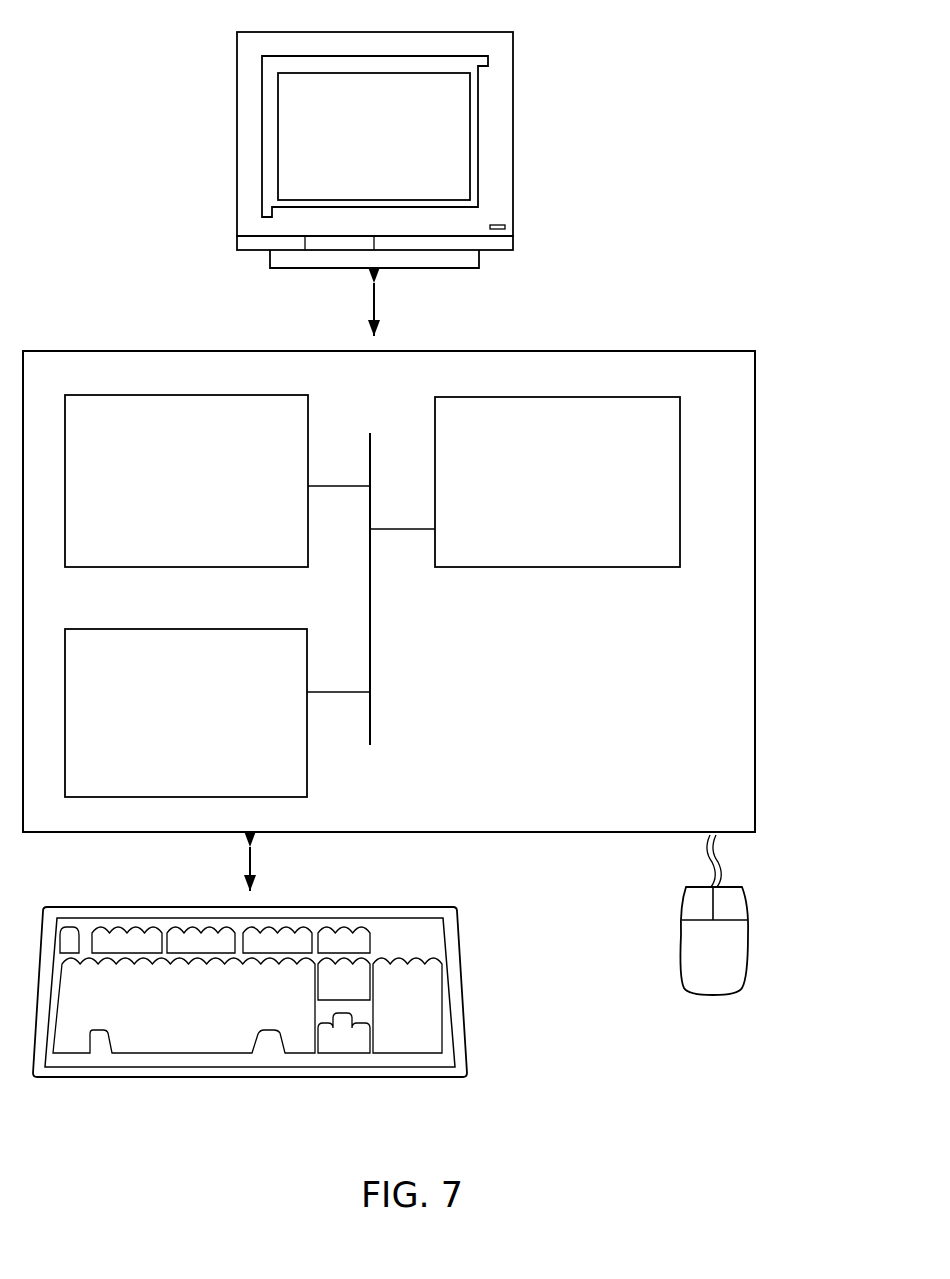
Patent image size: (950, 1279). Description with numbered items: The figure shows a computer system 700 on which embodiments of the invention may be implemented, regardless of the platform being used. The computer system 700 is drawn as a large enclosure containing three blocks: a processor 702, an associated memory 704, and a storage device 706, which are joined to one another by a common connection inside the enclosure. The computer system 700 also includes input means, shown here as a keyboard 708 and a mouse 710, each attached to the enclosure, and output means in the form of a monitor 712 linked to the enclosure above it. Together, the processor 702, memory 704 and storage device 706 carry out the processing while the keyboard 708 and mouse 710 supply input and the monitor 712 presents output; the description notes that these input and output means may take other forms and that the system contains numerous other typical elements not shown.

The computer system 700 is at (772, 202).
The processor 702 is at (532, 498).
The memory 704 is at (164, 493).
The storage device 706 is at (159, 728).
The keyboard 708 is at (152, 1033).
The mouse 710 is at (690, 965).
The monitor 712 is at (352, 153).